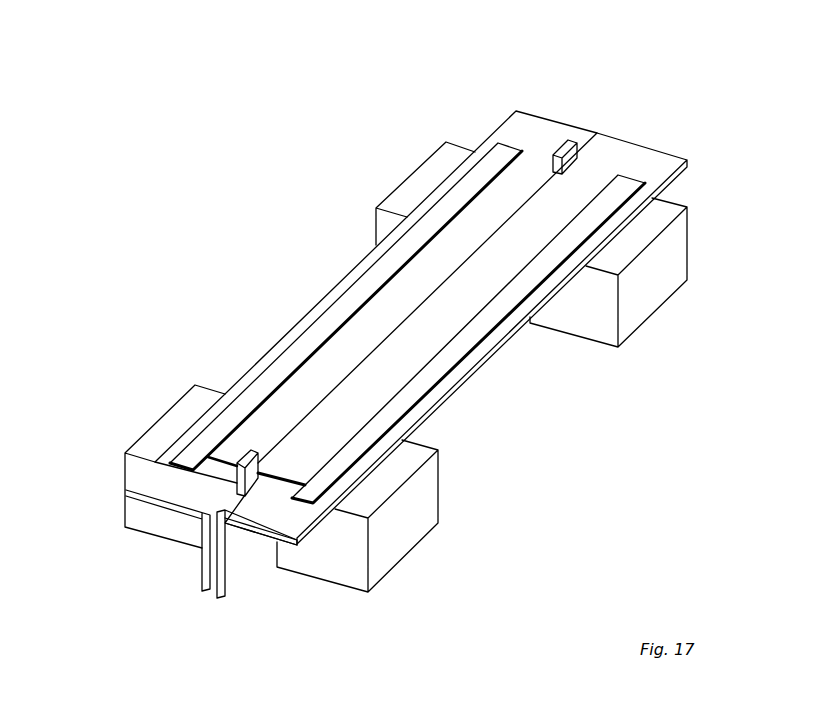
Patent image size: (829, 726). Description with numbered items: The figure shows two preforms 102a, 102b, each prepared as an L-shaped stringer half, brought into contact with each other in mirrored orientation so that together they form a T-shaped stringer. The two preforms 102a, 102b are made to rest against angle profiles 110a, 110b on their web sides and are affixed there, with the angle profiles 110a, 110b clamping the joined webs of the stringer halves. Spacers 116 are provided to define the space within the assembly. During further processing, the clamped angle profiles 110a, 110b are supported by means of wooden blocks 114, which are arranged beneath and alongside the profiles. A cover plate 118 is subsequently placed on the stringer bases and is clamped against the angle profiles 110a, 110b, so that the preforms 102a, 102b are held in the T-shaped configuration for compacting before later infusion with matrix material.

The wooden blocks 114 is at (410, 175).
The preform 102a is at (293, 323).
The preform 102b is at (490, 360).
The spacers 116 is at (228, 460).
The cover plate 118 is at (268, 422).
The angle profile 110a is at (157, 503).
The angle profile 110b is at (243, 525).